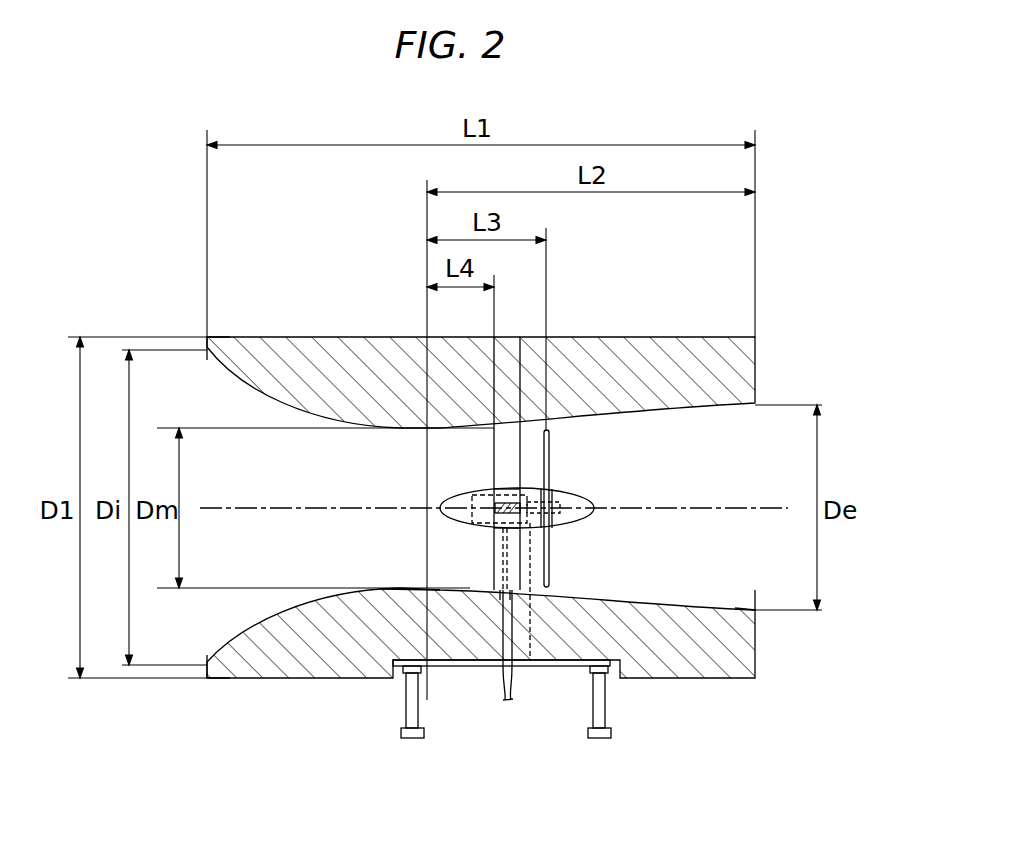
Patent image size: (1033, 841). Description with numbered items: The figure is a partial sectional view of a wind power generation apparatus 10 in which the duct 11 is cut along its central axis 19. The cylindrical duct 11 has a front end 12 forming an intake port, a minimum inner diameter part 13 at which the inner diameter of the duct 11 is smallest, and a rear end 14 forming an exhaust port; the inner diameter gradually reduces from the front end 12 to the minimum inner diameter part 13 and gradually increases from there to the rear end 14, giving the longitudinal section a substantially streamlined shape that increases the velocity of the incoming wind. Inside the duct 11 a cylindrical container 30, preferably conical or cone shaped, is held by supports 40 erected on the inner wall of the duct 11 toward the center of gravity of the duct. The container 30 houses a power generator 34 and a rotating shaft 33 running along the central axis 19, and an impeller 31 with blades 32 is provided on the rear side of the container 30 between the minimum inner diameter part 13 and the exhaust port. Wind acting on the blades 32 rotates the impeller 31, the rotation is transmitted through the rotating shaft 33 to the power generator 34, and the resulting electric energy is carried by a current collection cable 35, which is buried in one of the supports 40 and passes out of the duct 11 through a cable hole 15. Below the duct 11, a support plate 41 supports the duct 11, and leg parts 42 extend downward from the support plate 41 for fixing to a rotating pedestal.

The wind power generation apparatus 10 is at (678, 727).
The duct 11 is at (279, 663).
The front end 12 is at (203, 337).
The minimum inner diameter part 13 is at (399, 595).
The rear end 14 is at (762, 613).
The cable hole 15 is at (496, 651).
The central axis 19 is at (772, 507).
The cylindrical container 30 is at (487, 530).
The impeller 31 is at (553, 487).
The blades 32 is at (550, 446).
The rotating shaft 33 is at (535, 660).
The power generator 34 is at (476, 495).
The current collection cable 35 is at (506, 702).
The support 40 is at (510, 503).
The support plate 41 is at (568, 668).
The leg parts 42 is at (606, 720).